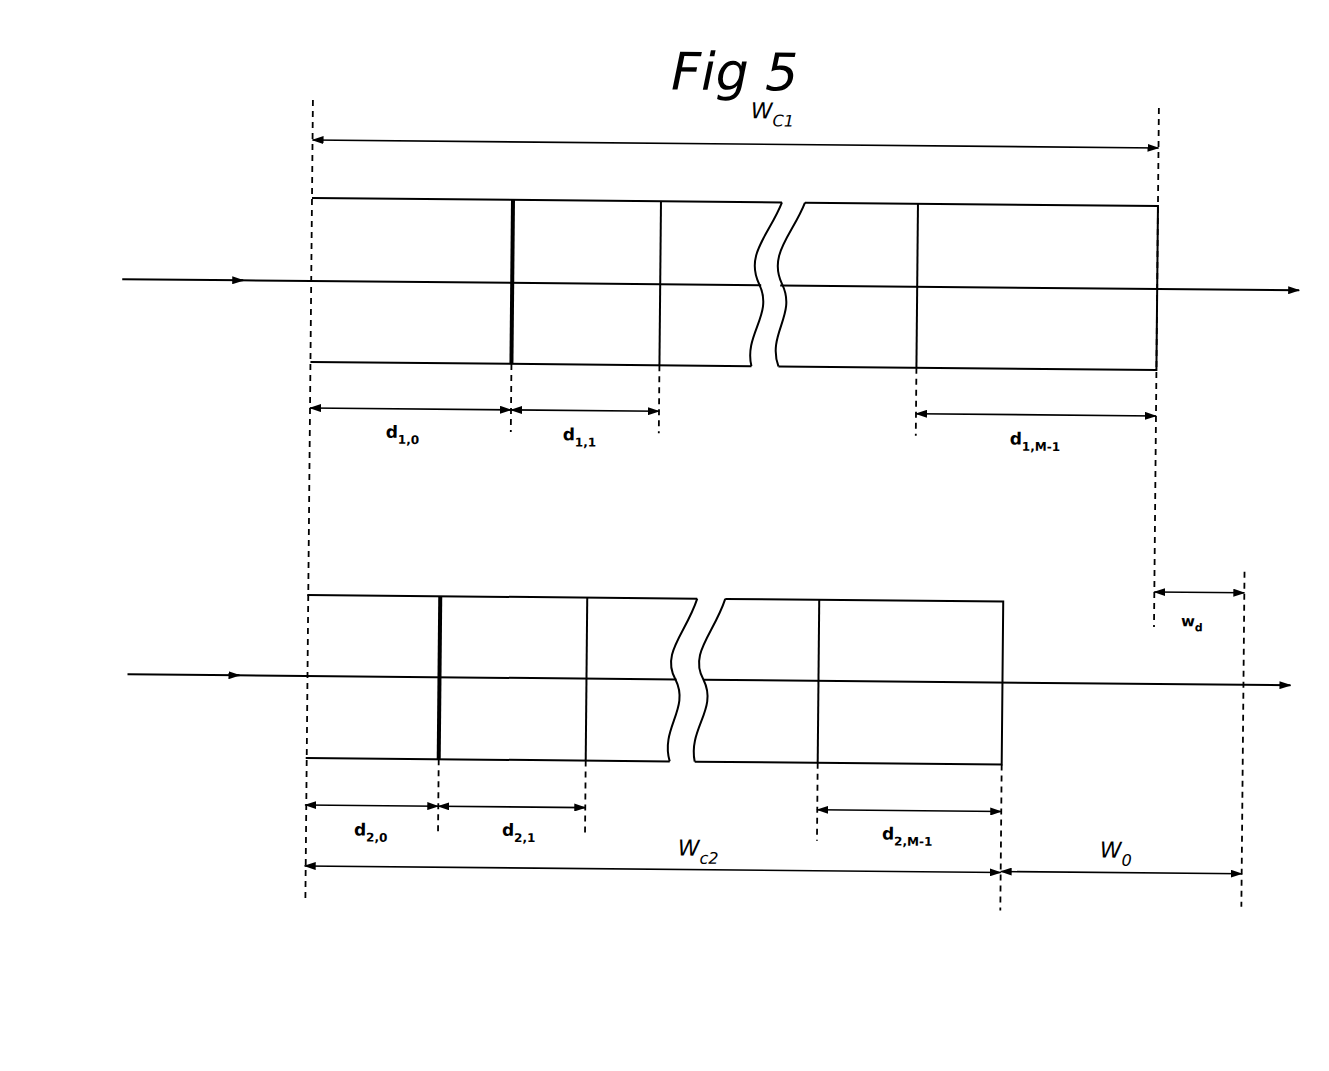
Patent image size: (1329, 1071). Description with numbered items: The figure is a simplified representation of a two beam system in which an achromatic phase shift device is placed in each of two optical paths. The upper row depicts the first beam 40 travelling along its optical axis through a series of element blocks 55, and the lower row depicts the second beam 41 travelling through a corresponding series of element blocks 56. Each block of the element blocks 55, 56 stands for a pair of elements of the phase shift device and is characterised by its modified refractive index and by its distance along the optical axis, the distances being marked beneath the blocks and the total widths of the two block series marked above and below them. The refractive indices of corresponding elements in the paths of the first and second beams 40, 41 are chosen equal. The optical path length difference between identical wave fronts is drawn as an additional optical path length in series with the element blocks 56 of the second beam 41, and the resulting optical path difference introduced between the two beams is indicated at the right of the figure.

The first beam 40 is at (224, 281).
The second beam 41 is at (228, 679).
The element blocks 55 is at (443, 209).
The element blocks 56 is at (416, 612).